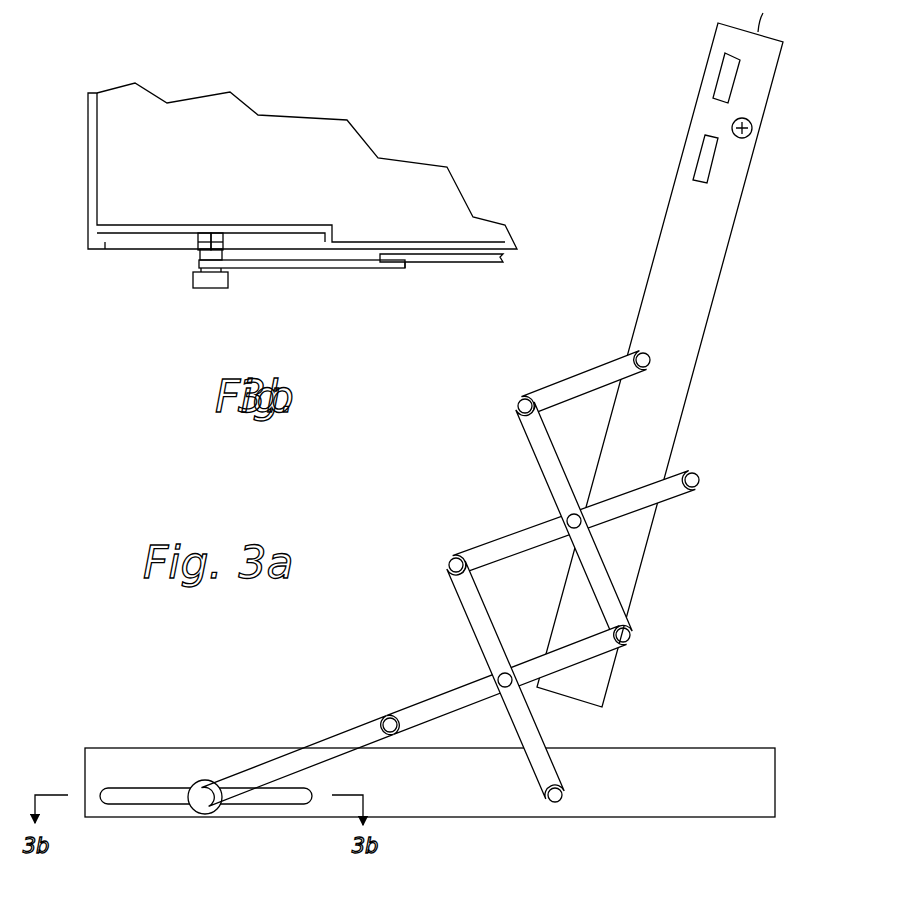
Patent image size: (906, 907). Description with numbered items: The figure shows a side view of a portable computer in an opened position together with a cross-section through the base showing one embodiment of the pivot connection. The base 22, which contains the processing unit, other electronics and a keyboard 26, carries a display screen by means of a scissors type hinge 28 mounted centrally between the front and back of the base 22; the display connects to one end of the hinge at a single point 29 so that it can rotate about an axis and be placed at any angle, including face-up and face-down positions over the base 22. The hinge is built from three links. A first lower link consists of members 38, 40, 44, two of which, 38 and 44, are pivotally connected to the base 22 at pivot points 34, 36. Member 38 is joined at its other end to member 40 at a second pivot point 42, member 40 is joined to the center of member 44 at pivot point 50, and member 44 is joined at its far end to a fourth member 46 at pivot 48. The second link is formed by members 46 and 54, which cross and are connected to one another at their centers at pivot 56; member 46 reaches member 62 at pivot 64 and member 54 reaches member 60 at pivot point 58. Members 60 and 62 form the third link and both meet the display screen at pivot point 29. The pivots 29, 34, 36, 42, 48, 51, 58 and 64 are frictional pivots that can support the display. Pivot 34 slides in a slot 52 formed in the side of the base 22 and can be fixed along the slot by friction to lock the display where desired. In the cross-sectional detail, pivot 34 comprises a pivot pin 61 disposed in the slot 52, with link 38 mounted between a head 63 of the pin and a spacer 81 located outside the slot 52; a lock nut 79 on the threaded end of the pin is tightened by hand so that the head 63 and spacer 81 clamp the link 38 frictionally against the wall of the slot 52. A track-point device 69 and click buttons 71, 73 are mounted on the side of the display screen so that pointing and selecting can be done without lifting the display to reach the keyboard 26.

In FIG. 3b, the base 22 is at (89, 169).
In FIG. 3a, the base 22 is at (778, 790).
In FIG. 3a, the keyboard 26 is at (168, 719).
In FIG. 3a, the scissors type hinge 28 is at (390, 513).
In FIG. 3a, the pivot point 29 is at (638, 355).
In FIG. 3b, the pivot point 34 is at (210, 306).
In FIG. 3a, the pivot point 34 is at (205, 813).
In FIG. 3a, the pivot point 36 is at (562, 790).
In FIG. 3b, the member 38 is at (339, 272).
In FIG. 3a, the member 38 is at (293, 745).
In FIG. 3b, the member 40 is at (455, 267).
In FIG. 3a, the member 40 is at (421, 694).
In FIG. 3b, the pivot point 42 is at (396, 268).
In FIG. 3a, the pivot point 42 is at (380, 717).
In FIG. 3a, the member 44 is at (460, 615).
In FIG. 3a, the member 46 is at (497, 532).
In FIG. 3a, the pivot 48 is at (446, 565).
In FIG. 3a, the pivot point 50 is at (500, 676).
In FIG. 3a, the pivot 51 is at (631, 638).
In FIG. 3b, the slot 52 is at (143, 247).
In FIG. 3a, the slot 52 is at (173, 787).
In FIG. 3a, the member 54 is at (520, 455).
In FIG. 3a, the pivot 56 is at (568, 517).
In FIG. 3a, the pivot point 58 is at (522, 405).
In FIG. 3a, the member 60 is at (573, 372).
In FIG. 3b, the pivot pin 61 is at (206, 236).
In FIG. 3a, the member 62 is at (698, 438).
In FIG. 3b, the head 63 is at (218, 236).
In FIG. 3a, the pivot 64 is at (699, 480).
In FIG. 3a, the track-point device 69 is at (753, 128).
In FIG. 3a, the click button 71 is at (718, 80).
In FIG. 3a, the click button 73 is at (698, 157).
In FIG. 3b, the lock nut 79 is at (218, 283).
In FIG. 3b, the spacer 81 is at (198, 257).